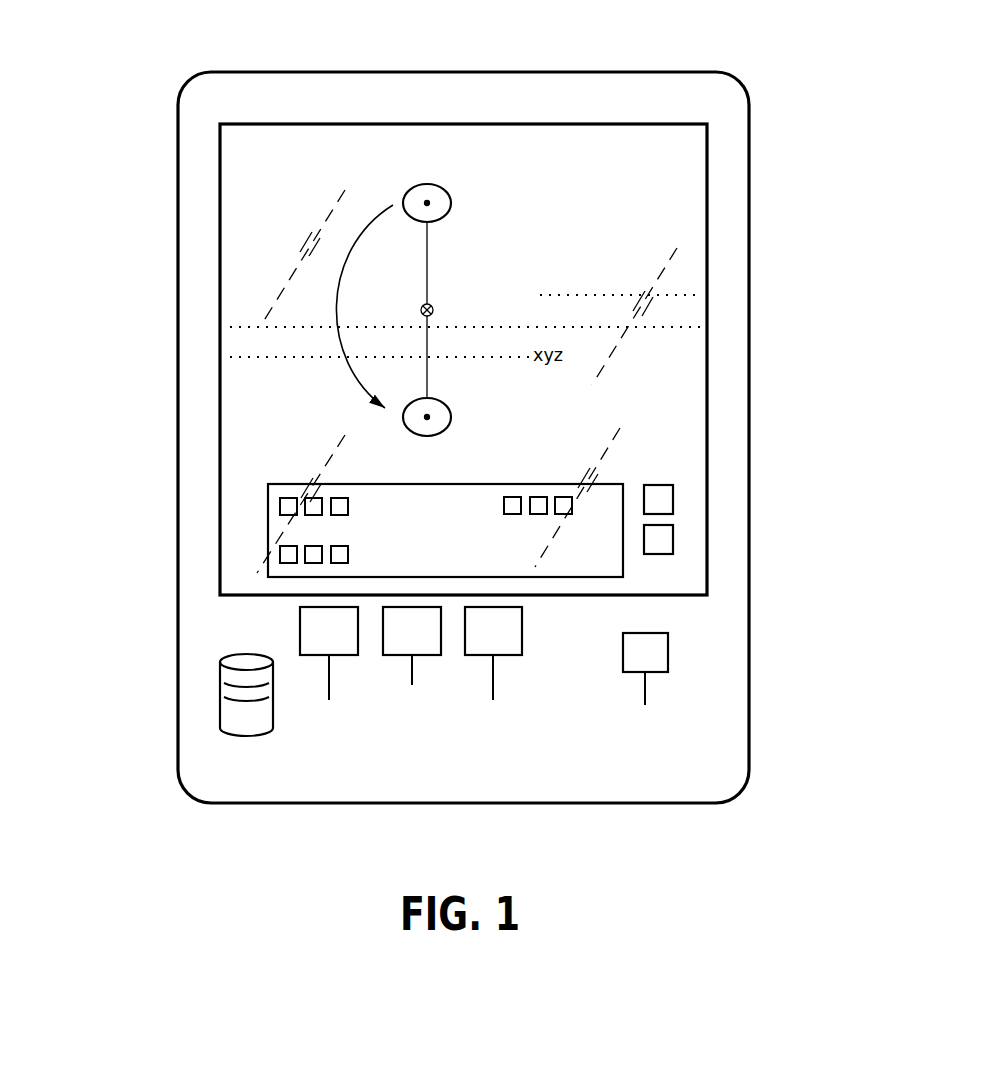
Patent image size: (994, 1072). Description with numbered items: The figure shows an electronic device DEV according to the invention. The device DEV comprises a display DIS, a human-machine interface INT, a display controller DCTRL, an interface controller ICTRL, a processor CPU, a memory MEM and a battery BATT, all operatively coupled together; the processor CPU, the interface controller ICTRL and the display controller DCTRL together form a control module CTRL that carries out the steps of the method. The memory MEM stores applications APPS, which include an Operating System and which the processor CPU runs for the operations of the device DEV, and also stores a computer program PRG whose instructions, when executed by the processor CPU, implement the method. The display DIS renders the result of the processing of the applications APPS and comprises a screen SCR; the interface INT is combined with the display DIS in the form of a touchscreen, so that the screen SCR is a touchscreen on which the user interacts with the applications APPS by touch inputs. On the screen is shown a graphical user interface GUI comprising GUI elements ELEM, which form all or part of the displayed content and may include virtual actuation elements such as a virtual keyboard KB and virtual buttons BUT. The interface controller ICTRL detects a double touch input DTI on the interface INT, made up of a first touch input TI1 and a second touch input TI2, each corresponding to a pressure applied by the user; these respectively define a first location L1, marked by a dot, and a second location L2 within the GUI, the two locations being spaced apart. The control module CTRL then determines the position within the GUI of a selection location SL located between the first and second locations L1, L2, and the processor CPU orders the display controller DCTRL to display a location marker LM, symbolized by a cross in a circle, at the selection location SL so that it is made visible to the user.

The electronic device DEV is at (153, 415).
The screen SCR is at (508, 145).
The human-machine interface INT is at (597, 228).
The display DIS is at (690, 392).
The graphical user interface GUI is at (545, 215).
The GUI element ELEM is at (530, 282).
The selection location SL is at (436, 312).
The location marker LM is at (420, 317).
The double touch input DTI is at (400, 188).
The first touch input TI1 is at (450, 197).
The second touch input TI2 is at (450, 411).
The first location L1 is at (427, 203).
The second location L2 is at (427, 417).
The virtual keyboard KB is at (463, 500).
The buttons BUT is at (655, 482).
The memory MEM is at (213, 707).
The computer program PRG is at (253, 687).
The applications APPS is at (255, 703).
The display controller DCTRL is at (329, 670).
The interface controller ICTRL is at (412, 660).
The processor CPU is at (493, 670).
The battery BATT is at (646, 685).
The control module CTRL is at (353, 745).